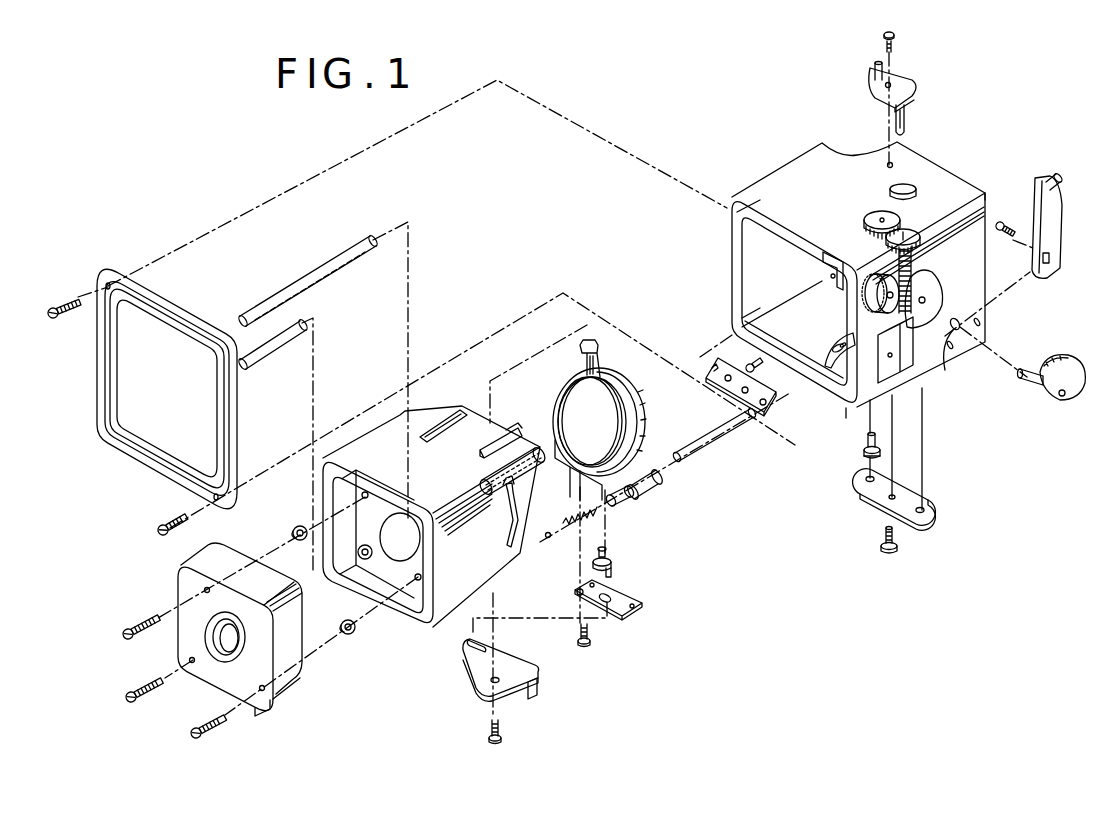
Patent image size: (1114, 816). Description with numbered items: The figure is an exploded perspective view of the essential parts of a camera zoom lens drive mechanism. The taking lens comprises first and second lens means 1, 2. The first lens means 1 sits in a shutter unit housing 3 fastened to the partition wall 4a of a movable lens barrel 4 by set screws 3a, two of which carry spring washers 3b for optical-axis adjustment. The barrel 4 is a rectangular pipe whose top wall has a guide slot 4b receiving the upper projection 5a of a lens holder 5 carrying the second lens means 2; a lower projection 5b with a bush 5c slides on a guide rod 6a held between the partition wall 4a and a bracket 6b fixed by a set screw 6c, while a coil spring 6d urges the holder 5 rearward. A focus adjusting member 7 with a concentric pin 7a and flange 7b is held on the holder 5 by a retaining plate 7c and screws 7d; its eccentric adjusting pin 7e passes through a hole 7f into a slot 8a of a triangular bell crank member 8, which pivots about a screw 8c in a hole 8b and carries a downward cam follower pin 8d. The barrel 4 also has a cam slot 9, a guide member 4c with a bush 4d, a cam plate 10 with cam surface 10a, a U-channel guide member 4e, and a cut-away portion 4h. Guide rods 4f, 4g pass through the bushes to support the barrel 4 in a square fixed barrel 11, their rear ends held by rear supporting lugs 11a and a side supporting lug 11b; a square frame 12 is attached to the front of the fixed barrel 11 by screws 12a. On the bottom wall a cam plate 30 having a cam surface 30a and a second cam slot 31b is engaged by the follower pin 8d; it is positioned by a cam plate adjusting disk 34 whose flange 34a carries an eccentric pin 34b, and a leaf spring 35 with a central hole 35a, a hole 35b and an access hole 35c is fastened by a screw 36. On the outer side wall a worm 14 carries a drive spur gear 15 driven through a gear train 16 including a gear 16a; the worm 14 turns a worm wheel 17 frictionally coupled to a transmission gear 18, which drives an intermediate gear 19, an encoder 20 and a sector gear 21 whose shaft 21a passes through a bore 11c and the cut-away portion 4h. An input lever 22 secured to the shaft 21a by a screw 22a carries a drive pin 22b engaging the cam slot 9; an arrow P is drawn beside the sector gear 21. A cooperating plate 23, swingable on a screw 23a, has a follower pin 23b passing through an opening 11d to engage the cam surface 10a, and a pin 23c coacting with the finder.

The first lens means 1 is at (210, 632).
The second lens means 2 is at (608, 425).
The shutter unit housing 3 is at (175, 570).
The set screws 3a is at (131, 620).
The spring washers 3b is at (298, 525).
The movable lens barrel 4 is at (365, 438).
The partition wall 4a is at (413, 588).
The guide slot 4b is at (445, 430).
The guide member 4c is at (508, 487).
The bush 4d is at (486, 473).
The guide member 4e is at (370, 540).
The guide rod 4f is at (300, 280).
The guide rod 4g is at (270, 350).
The cut-away portion 4h is at (550, 533).
The lens holder 5 is at (553, 398).
The upper projection 5a is at (595, 340).
The lower projection 5b is at (661, 479).
The bush 5c is at (622, 504).
The guide rod 6a is at (727, 437).
The bracket 6b is at (775, 403).
The set screw 6c is at (745, 362).
The coil spring 6d is at (573, 526).
The focus adjusting member 7 is at (635, 607).
The concentric pin 7a is at (614, 554).
The flange 7b is at (615, 565).
The retaining plate 7c is at (635, 610).
The screws 7d is at (590, 642).
The adjusting pin 7e is at (612, 577).
The hole 7f is at (606, 604).
The triangular bell crank member 8 is at (476, 680).
The slot 8a is at (465, 650).
The hole 8b is at (498, 685).
The screw 8c is at (485, 735).
The cam follower pin 8d is at (540, 692).
The cam slot 9 is at (505, 535).
The cam plate 10 is at (483, 450).
The cam surface 10a is at (490, 443).
The fixed barrel 11 is at (786, 163).
The rear supporting lugs 11a is at (987, 192).
The side supporting lug 11b is at (827, 271).
The bore 11c is at (955, 332).
The opening 11d is at (908, 185).
The square frame 12 is at (105, 365).
The screws 12a is at (62, 296).
The worm 14 is at (918, 262).
The drive spur gear 15 is at (886, 241).
The gear train 16 is at (853, 199).
The gear 16a is at (877, 210).
The worm wheel 17 is at (882, 310).
The transmission gear 18 is at (870, 300).
The intermediate gear 19 is at (935, 290).
The encoder 20 is at (896, 360).
The sector gear 21 is at (1061, 360).
The shaft 21a is at (1042, 386).
The input lever 22 is at (1054, 230).
The screw 22a is at (1003, 220).
The drive pin 22b is at (1052, 182).
The cooperating plate 23 is at (910, 85).
The screw 23a is at (897, 40).
The follower pin 23b is at (905, 121).
The pin 23c is at (876, 70).
The cam plate 30 is at (846, 412).
The cam surface 30a is at (848, 334).
The second cam slot 31b is at (828, 349).
The cam plate adjusting disk 34 is at (836, 474).
The flange 34a is at (866, 456).
The eccentric pin 34b is at (862, 442).
The leaf spring 35 is at (877, 498).
The central hole 35a is at (897, 496).
The hole 35b is at (926, 511).
The access hole 35c is at (875, 479).
The screw 36 is at (889, 556).
The pivot direction P is at (1022, 392).